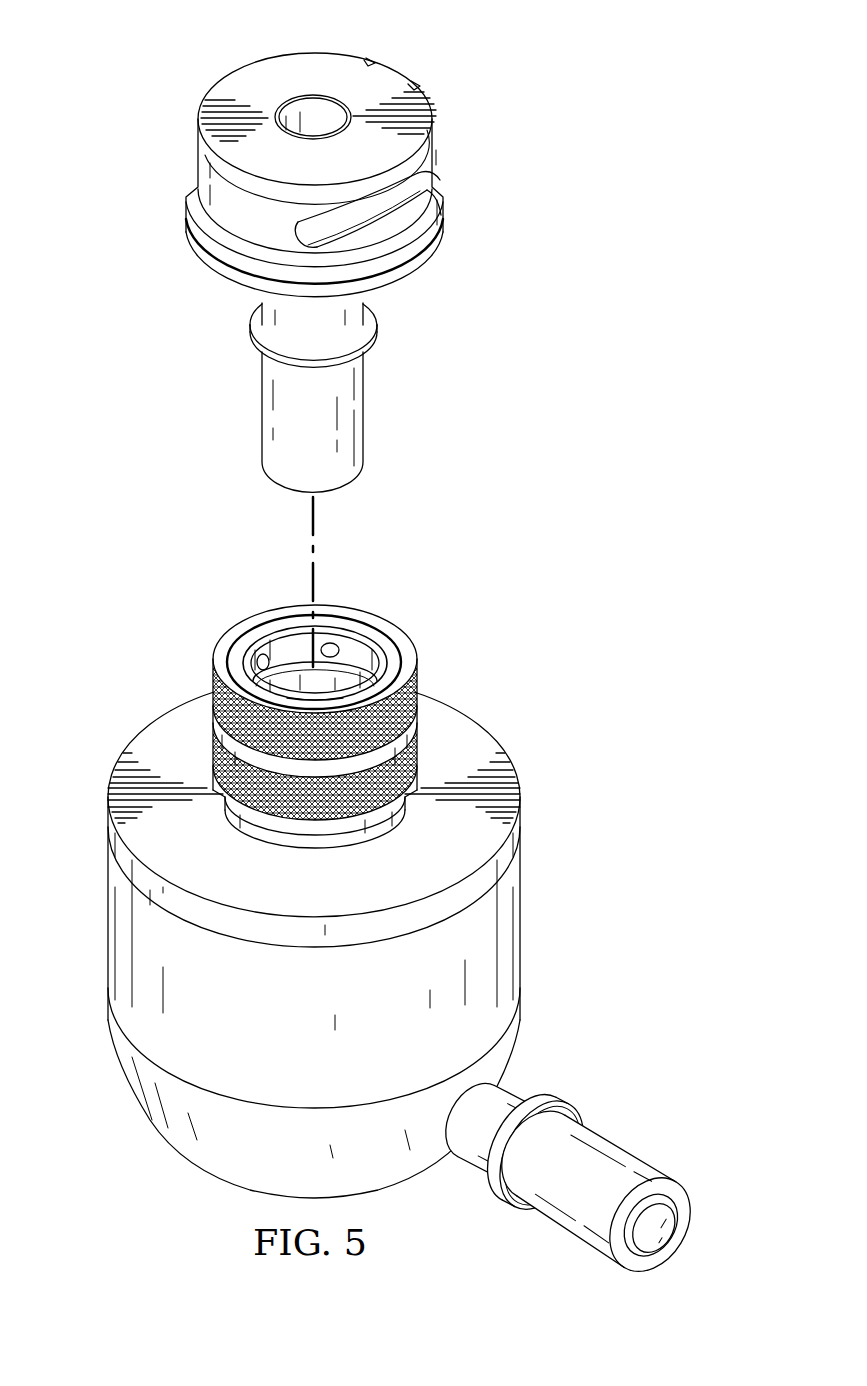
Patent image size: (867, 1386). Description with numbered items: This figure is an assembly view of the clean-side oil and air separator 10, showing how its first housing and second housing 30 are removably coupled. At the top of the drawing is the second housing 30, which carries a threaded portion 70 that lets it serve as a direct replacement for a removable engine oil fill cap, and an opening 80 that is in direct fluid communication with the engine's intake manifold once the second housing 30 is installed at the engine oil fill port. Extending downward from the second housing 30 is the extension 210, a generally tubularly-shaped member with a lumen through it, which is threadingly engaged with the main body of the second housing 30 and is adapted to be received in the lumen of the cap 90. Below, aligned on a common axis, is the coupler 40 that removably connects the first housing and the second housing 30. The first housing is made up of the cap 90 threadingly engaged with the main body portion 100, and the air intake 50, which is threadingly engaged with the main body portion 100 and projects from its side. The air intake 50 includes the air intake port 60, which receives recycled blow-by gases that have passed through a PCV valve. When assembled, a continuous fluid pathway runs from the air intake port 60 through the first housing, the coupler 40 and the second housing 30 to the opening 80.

The clean-side oil and air separator 10 is at (611, 95).
The second housing 30 is at (198, 153).
The coupler 40 is at (424, 628).
The air intake 50 is at (572, 1233).
The air intake port 60 is at (657, 1237).
The threaded portion 70 is at (368, 213).
The opening 80 is at (327, 109).
The cap 90 is at (167, 713).
The main body portion 100 is at (108, 913).
The extension 210 is at (262, 406).